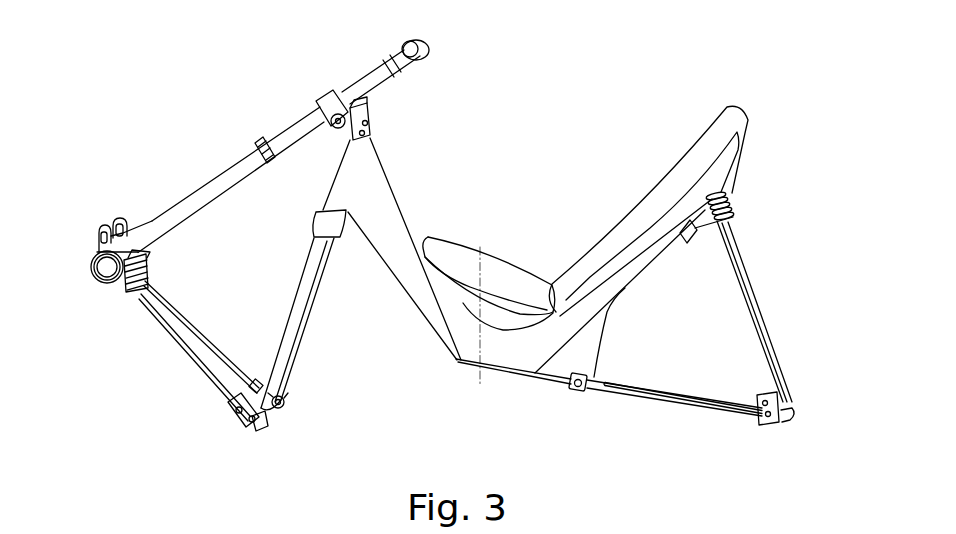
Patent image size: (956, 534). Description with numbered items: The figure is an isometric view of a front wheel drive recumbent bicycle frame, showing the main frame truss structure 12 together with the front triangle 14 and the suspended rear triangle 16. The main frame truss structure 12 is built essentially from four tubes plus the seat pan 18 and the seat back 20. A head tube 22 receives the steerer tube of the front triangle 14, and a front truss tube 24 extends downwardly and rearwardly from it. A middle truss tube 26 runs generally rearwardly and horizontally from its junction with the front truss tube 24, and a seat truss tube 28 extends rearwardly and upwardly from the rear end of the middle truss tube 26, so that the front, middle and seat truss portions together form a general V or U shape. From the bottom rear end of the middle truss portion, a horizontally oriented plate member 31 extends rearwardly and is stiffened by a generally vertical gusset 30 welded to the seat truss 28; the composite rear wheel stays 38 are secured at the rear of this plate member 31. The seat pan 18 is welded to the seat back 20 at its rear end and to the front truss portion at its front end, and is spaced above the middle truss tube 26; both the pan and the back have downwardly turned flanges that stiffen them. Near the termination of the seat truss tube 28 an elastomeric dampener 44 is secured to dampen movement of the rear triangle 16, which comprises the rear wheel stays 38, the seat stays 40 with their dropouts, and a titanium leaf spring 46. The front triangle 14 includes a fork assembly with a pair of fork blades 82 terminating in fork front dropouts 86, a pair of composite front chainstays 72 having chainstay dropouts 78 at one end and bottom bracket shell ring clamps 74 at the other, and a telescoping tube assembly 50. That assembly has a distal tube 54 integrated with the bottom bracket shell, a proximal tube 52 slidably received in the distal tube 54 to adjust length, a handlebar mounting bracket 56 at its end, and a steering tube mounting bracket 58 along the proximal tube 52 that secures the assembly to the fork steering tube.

The main frame truss structure 12 is at (420, 338).
The front triangle 14 is at (242, 88).
The rear triangle 16 is at (810, 242).
The seat pan 18 is at (482, 273).
The seat back 20 is at (693, 163).
The head tube 22 is at (340, 176).
The front truss tube 24 is at (400, 255).
The middle truss tube 26 is at (486, 343).
The seat truss tube 28 is at (603, 295).
The gusset 30 is at (565, 380).
The plate member 31 is at (567, 363).
The rear wheel stays 38 is at (640, 391).
The seat stays 40 is at (760, 333).
The elastomeric dampener 44 is at (720, 193).
The titanium leaf spring 46 is at (712, 226).
The telescoping tube assembly 50 is at (137, 153).
The proximal tube 52 is at (355, 87).
The distal tube 54 is at (218, 187).
The handlebar mounting bracket 56 is at (396, 62).
The steering tube mounting bracket 58 is at (328, 103).
The front chainstays 72 is at (180, 349).
The bottom bracket shell ring clamps 74 is at (91, 268).
The chainstay dropouts 78 is at (245, 413).
The fork blades 82 is at (298, 315).
The fork front dropouts 86 is at (287, 402).